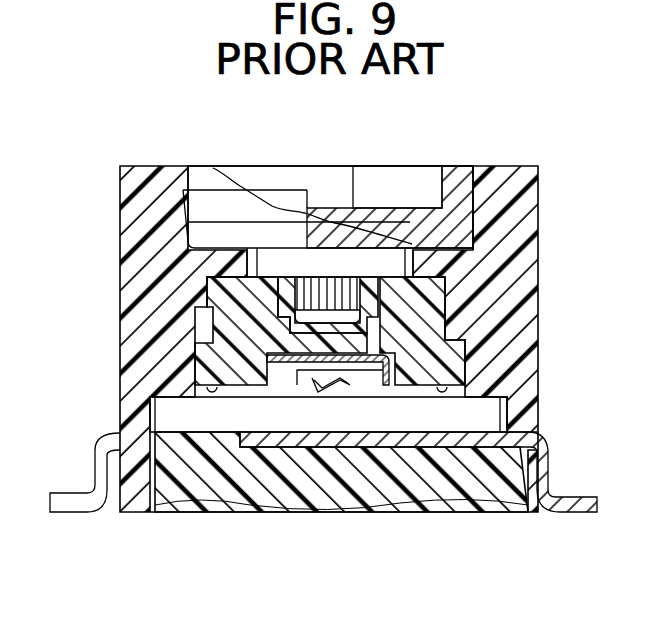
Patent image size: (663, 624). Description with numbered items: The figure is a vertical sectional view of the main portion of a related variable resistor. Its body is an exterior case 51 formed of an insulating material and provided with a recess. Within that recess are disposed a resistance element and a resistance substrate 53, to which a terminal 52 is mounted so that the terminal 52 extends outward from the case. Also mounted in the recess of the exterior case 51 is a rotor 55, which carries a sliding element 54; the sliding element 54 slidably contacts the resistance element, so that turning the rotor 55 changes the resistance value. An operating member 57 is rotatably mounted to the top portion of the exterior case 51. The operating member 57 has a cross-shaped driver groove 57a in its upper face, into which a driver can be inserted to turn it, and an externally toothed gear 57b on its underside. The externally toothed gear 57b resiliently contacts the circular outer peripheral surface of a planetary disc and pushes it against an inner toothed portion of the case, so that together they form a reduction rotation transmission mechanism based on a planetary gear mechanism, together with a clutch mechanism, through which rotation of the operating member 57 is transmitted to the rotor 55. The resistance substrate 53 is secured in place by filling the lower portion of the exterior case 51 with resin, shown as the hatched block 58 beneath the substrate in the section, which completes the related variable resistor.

The exterior case 51 is at (528, 286).
The terminal 52 is at (578, 510).
The resistance substrate 53 is at (490, 418).
The sliding element 54 is at (357, 399).
The rotor 55 is at (205, 361).
The operating member 57 is at (462, 179).
The cross-shaped driver groove 57a is at (314, 192).
The externally toothed gear 57b is at (310, 291).
The base block 58 is at (468, 505).